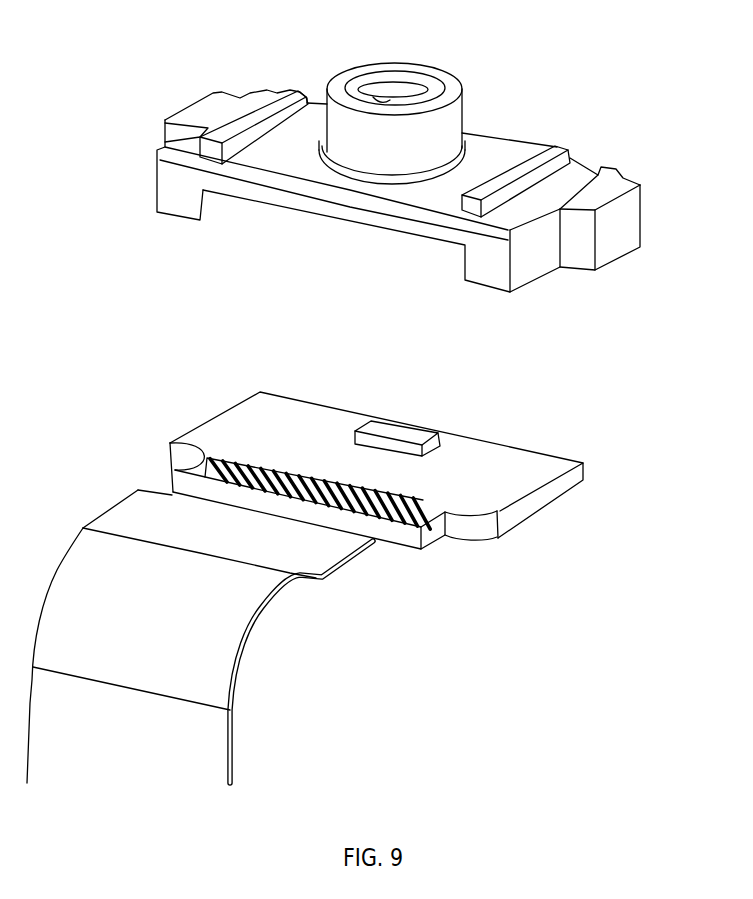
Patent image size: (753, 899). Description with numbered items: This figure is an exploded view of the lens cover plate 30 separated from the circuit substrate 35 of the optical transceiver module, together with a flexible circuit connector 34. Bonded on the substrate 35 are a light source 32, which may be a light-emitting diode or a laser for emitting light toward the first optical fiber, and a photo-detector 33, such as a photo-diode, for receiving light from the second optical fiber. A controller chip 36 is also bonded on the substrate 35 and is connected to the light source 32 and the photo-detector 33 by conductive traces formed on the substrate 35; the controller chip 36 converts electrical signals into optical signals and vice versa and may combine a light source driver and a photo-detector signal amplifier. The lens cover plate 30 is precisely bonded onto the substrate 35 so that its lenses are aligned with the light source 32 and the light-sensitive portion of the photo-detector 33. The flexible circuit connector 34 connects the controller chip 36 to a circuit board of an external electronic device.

The lens cover plate 30 is at (506, 146).
The light source 32 is at (437, 481).
The photo-detector 33 is at (352, 447).
The flexible circuit connector 34 is at (329, 565).
The circuit substrate 35 is at (540, 492).
The controller chip 36 is at (405, 424).